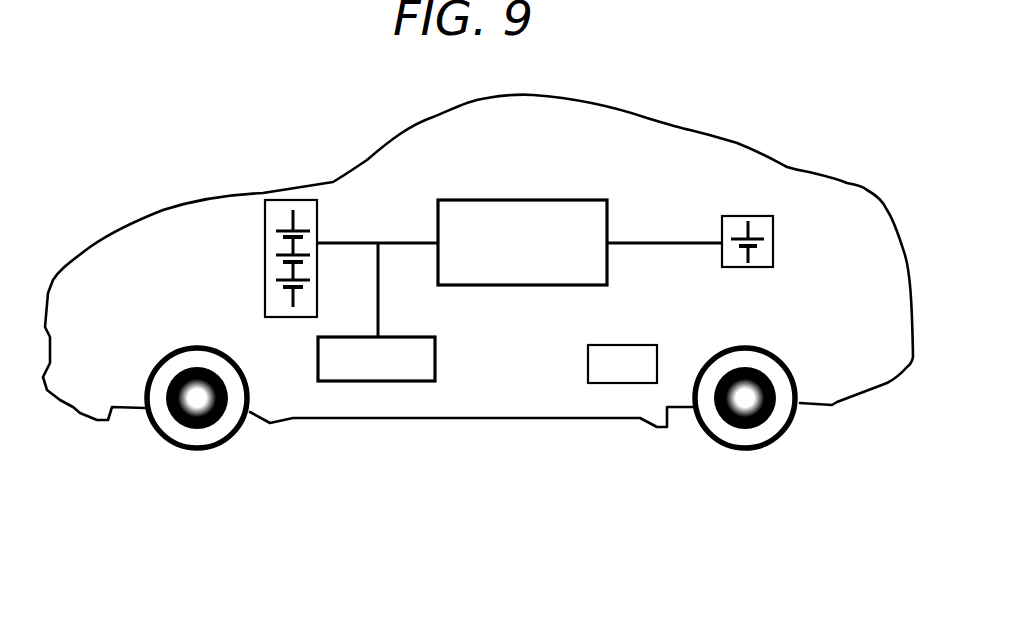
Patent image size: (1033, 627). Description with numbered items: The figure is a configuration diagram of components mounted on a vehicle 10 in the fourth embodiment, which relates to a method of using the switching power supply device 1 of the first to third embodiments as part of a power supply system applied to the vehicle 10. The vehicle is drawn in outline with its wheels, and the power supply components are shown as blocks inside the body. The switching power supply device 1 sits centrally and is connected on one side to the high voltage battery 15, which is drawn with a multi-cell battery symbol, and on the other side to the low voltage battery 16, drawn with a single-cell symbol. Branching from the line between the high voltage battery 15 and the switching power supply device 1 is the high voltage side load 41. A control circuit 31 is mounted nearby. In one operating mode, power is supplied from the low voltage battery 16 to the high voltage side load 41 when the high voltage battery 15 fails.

The vehicle 10 is at (792, 172).
The switching power supply device 1 is at (527, 199).
The high voltage battery 15 is at (264, 255).
The low voltage battery 16 is at (727, 215).
The control circuit 31 is at (619, 345).
The high voltage side load 41 is at (435, 382).